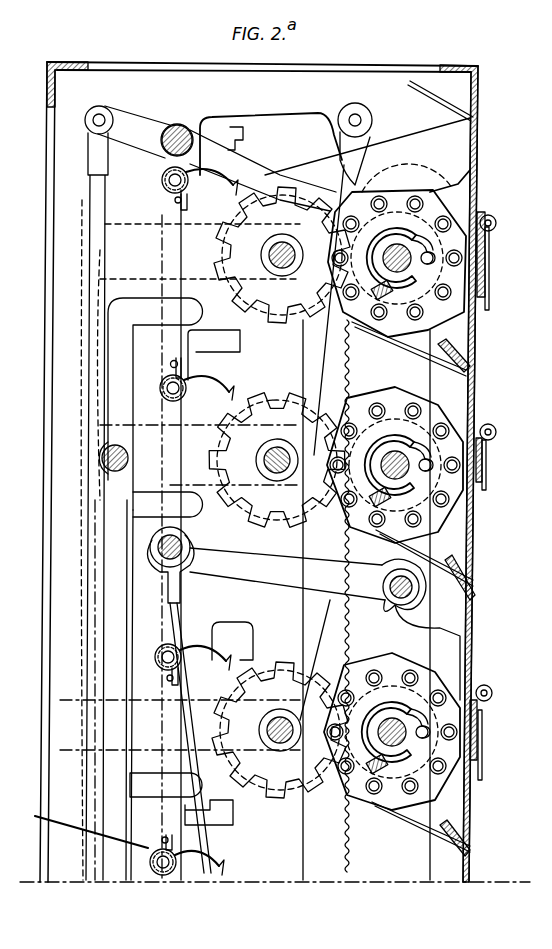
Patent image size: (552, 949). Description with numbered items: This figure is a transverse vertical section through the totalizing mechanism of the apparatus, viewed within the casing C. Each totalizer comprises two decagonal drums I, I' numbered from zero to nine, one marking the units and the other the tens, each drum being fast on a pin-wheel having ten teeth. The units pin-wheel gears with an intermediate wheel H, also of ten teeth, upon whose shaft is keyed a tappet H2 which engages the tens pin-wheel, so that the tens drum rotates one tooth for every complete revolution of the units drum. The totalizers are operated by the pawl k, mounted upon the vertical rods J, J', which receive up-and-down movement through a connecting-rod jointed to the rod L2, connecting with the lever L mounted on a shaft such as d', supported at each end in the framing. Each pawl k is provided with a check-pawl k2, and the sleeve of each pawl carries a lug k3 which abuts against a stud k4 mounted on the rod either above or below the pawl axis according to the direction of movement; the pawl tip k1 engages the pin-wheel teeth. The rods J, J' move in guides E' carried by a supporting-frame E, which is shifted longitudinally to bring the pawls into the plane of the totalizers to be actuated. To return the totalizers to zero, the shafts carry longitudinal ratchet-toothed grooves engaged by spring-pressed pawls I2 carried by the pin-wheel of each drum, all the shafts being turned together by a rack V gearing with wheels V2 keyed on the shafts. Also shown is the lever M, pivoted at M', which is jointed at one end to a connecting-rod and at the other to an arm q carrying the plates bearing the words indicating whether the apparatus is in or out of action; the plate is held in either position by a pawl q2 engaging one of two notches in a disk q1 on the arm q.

The casing frame C is at (275, 472).
The lever M is at (208, 493).
The pivot M' is at (185, 124).
The pawl k is at (214, 183).
The pawl tip k1 is at (222, 661).
The check-pawl k2 is at (244, 134).
The lug k3 is at (175, 198).
The stud k4 is at (178, 207).
The guides E' is at (199, 511).
The supporting-frame E is at (180, 652).
The vertical rod J is at (180, 535).
The vertical rod J' is at (99, 827).
The rod L2 is at (166, 570).
The lever L is at (215, 560).
The shaft d' is at (421, 629).
The intermediate wheel H is at (281, 322).
The tappet H2 is at (318, 640).
The rack V is at (366, 600).
The decagonal drum I is at (352, 328).
The decagonal drum I' is at (392, 746).
The pawl q2 is at (364, 120).
The disk q1 is at (402, 156).
The arm q is at (369, 130).
The spring-pressed pawl I2 is at (432, 252).
The wheel V2 is at (450, 445).